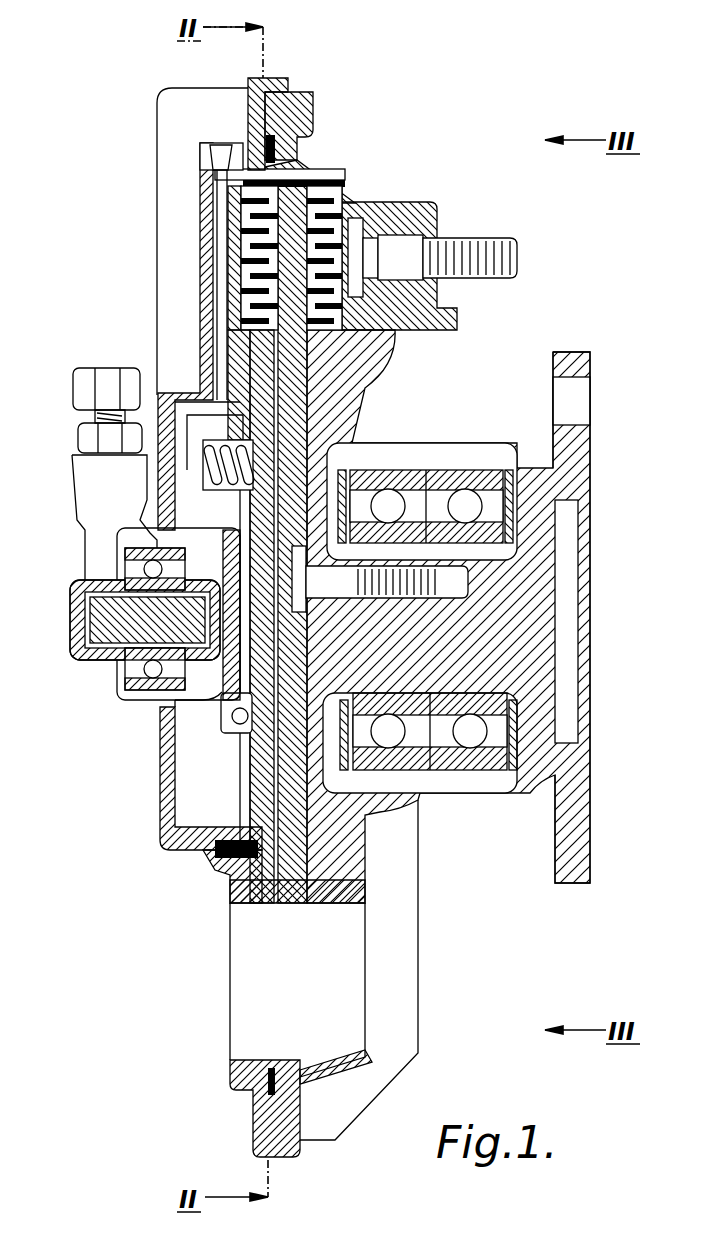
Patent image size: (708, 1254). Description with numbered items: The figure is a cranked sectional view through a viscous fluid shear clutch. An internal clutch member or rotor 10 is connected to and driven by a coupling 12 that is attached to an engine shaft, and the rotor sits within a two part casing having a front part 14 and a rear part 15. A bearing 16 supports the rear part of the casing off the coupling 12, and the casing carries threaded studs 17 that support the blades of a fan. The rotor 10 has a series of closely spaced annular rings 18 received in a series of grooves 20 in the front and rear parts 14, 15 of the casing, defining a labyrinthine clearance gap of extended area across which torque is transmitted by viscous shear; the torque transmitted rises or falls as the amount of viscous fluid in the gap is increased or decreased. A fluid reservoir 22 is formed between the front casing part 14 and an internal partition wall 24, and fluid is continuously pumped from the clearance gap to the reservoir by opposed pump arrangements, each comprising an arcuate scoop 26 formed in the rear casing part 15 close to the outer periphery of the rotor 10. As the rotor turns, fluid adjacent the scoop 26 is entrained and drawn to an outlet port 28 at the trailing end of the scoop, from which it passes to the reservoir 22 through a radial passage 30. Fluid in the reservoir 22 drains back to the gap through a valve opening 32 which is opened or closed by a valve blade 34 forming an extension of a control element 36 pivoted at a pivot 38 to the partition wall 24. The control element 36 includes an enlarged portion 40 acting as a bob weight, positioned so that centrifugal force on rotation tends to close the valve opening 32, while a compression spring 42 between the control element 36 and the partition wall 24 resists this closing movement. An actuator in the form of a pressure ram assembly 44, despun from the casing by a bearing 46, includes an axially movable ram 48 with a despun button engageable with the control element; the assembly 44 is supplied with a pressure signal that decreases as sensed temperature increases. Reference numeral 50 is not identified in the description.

The rotor 10 is at (305, 397).
The coupling 12 is at (557, 447).
The front part 14 is at (277, 80).
The rear part 15 is at (307, 113).
The bearing 16 is at (443, 765).
The threaded studs 17 is at (473, 234).
The annular rings 18 is at (340, 213).
The grooves 20 is at (372, 342).
The fluid reservoir 22 is at (207, 815).
The partition wall 24 is at (252, 788).
The arcuate scoop 26 is at (300, 167).
The outlet port 28 is at (243, 175).
The radial passage 30 is at (218, 207).
The valve opening 32 is at (265, 414).
The valve blade 34 is at (238, 385).
The control element 36 is at (185, 530).
The pivot 38 is at (240, 728).
The enlarged portion 40 is at (190, 460).
The compression spring 42 is at (233, 425).
The pressure ram assembly 44 is at (62, 648).
The bearing 46 is at (140, 693).
The ram 48 is at (103, 610).
The lower housing 50 is at (165, 738).